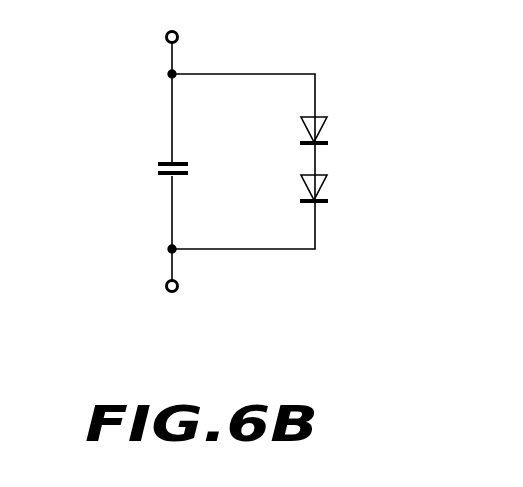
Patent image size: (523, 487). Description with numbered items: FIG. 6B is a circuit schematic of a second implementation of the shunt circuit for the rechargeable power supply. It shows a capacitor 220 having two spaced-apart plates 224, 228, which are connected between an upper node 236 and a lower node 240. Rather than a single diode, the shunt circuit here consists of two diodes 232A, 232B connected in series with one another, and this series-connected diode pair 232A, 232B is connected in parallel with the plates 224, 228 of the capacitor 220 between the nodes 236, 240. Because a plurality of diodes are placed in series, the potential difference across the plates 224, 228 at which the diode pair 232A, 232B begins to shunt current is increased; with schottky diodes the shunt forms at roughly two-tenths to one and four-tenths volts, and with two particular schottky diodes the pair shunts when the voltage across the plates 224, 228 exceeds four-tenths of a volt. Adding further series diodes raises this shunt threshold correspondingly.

The capacitor 220 is at (148, 171).
The plate 224 is at (160, 160).
The plate 228 is at (160, 178).
The diode 232A is at (323, 125).
The diode 232B is at (323, 183).
The node 236 is at (176, 31).
The node 240 is at (176, 292).